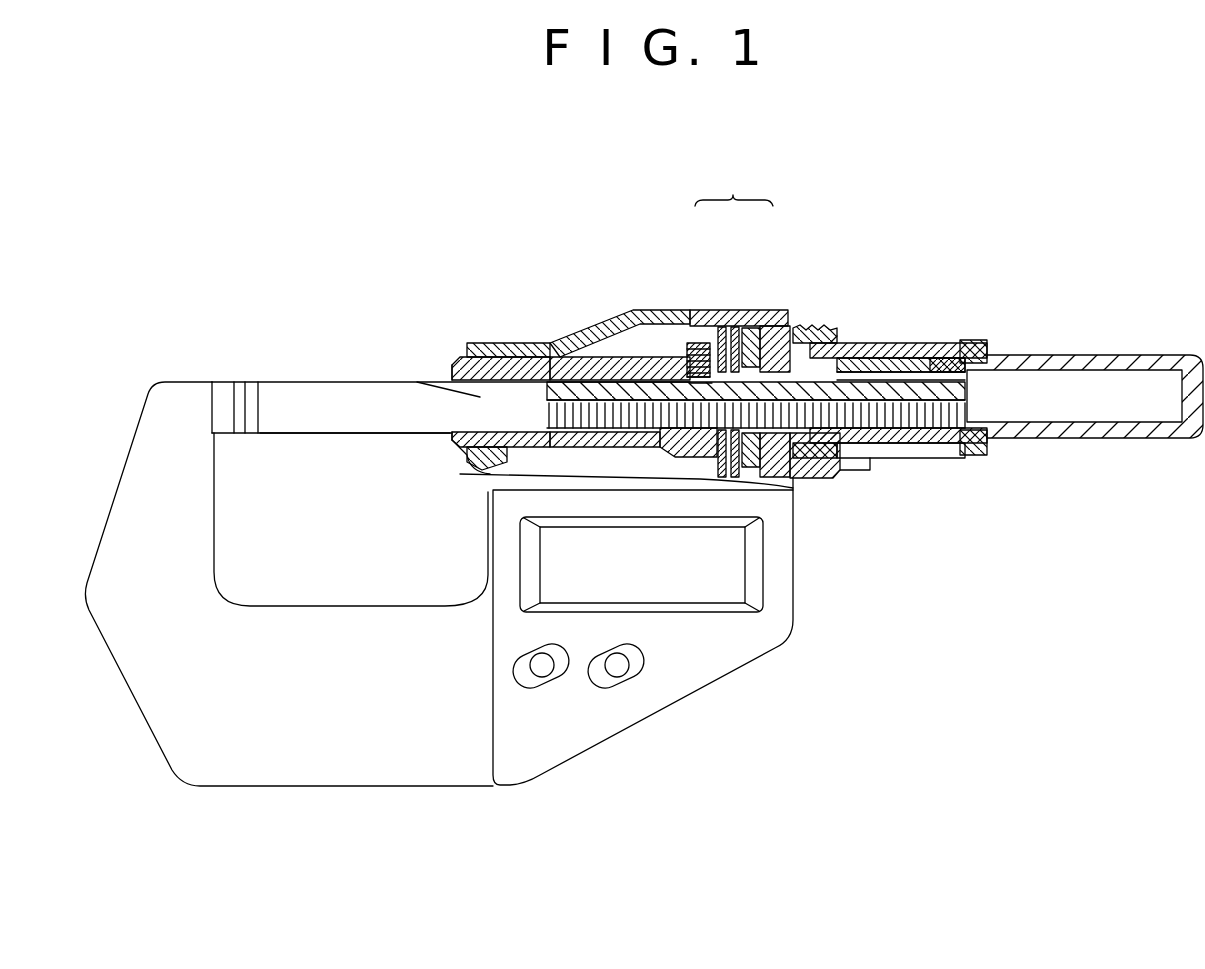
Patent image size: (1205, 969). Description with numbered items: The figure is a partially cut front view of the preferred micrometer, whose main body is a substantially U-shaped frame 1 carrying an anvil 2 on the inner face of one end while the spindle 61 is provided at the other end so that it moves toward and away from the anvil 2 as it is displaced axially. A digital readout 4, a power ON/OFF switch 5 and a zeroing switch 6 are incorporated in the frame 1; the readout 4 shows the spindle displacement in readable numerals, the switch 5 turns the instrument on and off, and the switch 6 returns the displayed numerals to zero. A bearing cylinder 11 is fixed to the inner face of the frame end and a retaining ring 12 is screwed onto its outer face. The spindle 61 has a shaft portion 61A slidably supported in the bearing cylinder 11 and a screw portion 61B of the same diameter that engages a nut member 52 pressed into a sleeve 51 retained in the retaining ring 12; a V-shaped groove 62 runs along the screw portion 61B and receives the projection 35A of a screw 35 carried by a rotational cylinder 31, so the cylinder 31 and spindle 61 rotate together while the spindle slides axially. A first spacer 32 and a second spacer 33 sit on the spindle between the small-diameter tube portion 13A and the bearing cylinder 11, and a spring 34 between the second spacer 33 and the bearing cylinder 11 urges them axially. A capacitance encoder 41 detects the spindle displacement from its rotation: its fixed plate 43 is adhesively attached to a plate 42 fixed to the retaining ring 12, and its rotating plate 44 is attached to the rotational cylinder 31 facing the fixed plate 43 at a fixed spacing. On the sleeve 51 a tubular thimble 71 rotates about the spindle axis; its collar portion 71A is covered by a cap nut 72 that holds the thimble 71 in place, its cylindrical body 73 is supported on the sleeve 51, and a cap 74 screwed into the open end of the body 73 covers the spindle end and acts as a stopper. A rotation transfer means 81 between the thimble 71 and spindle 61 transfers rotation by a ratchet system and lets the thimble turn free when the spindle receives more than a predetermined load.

The U-shaped frame 1 is at (340, 775).
The anvil 2 is at (226, 388).
The digital readout 4 is at (705, 595).
The ON/OFF switch 5 is at (542, 678).
The zeroing switch 6 is at (617, 678).
The bearing cylinder 11 is at (456, 362).
The retaining ring 12 is at (795, 312).
The small-diameter tube portion 13A is at (780, 470).
The rotational cylinder 31 is at (656, 398).
The first spacer 32 is at (615, 356).
The second spacer 33 is at (548, 344).
The spring 34 is at (490, 357).
The screw 35 is at (698, 344).
The projection 35A is at (655, 404).
The capacitance encoder 41 is at (734, 187).
The plate 42 is at (752, 330).
The fixed plate 43 is at (736, 330).
The rotating plate 44 is at (722, 330).
The sleeve 51 is at (867, 342).
The nut member 52 is at (913, 342).
The spindle 61 is at (322, 393).
The shaft portion 61A is at (358, 430).
The screw portion 61B is at (853, 445).
The V-shaped groove 62 is at (598, 330).
The tubular thimble 71 is at (953, 450).
The collar portion 71A is at (831, 342).
The cap nut 72 is at (817, 328).
The cylindrical body 73 is at (985, 455).
The cap 74 is at (1118, 430).
The rotation transfer means 81 is at (963, 342).